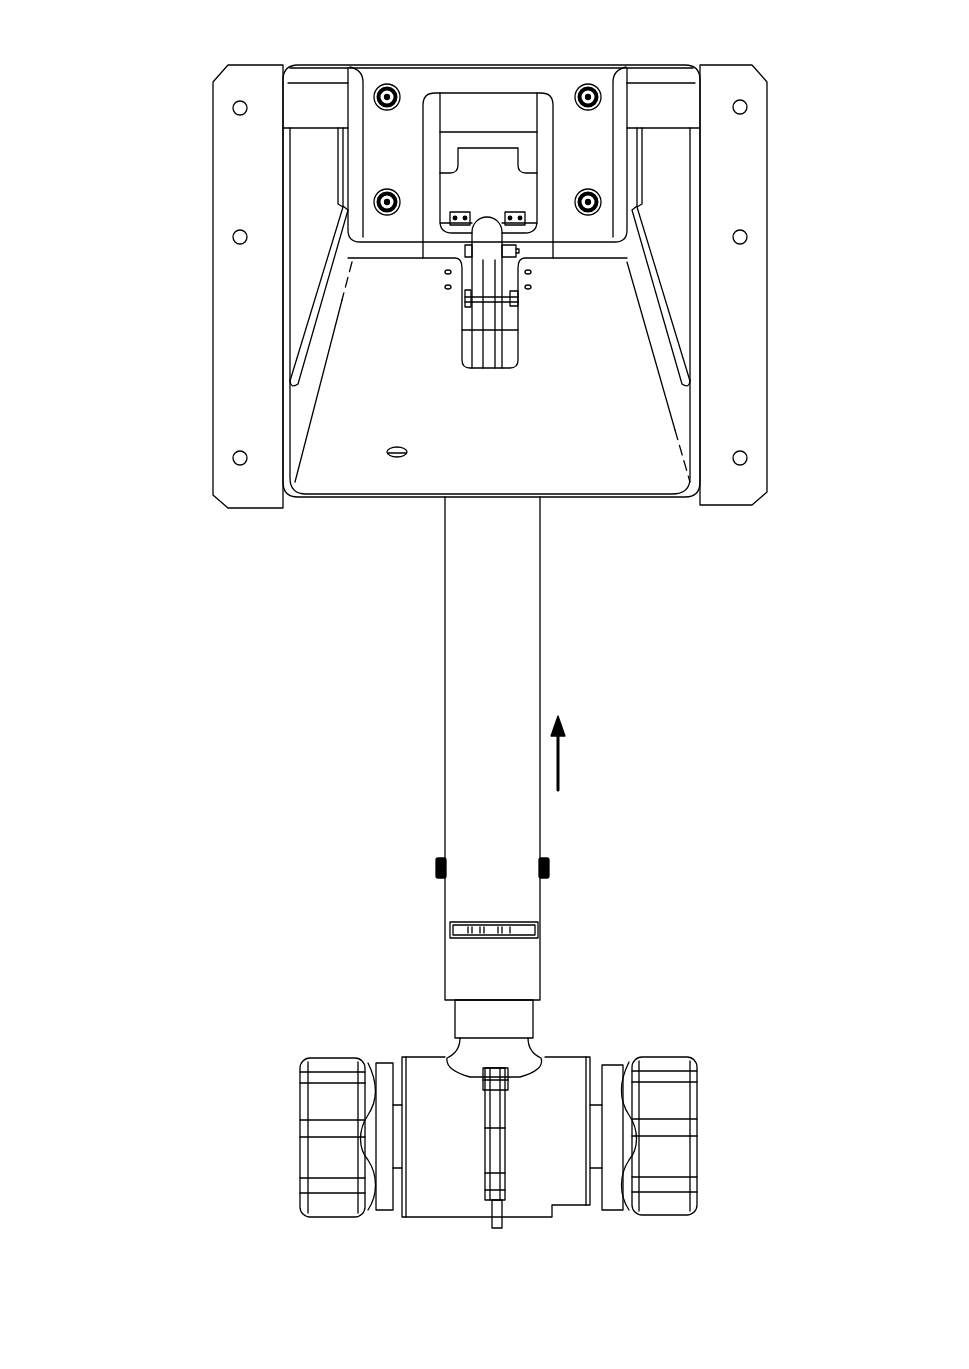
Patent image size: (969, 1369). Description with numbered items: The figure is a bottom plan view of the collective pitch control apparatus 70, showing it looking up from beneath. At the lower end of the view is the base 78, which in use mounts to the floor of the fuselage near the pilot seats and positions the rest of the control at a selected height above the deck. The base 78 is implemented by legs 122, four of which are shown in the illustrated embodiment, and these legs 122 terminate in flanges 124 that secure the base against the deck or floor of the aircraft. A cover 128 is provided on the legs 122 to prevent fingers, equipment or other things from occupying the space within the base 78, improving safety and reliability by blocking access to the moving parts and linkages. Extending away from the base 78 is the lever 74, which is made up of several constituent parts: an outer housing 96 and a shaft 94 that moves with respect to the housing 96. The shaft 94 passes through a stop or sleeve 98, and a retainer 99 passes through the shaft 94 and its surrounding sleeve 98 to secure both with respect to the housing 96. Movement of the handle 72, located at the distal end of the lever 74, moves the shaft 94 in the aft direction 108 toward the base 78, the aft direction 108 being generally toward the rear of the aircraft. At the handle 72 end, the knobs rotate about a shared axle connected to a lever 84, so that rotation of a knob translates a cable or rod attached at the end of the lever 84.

The apparatus 70 is at (113, 44).
The handle 72 is at (400, 1039).
The lever 74 is at (557, 695).
The base 78 is at (786, 315).
The lever 84 is at (505, 1226).
The shaft 94 is at (525, 1050).
The housing 96 is at (542, 812).
The sleeve 98 is at (530, 1016).
The retainer 99 is at (549, 866).
The aft direction 108 is at (560, 762).
The legs 122 is at (330, 268).
The flanges 124 is at (222, 386).
The cover 128 is at (396, 488).